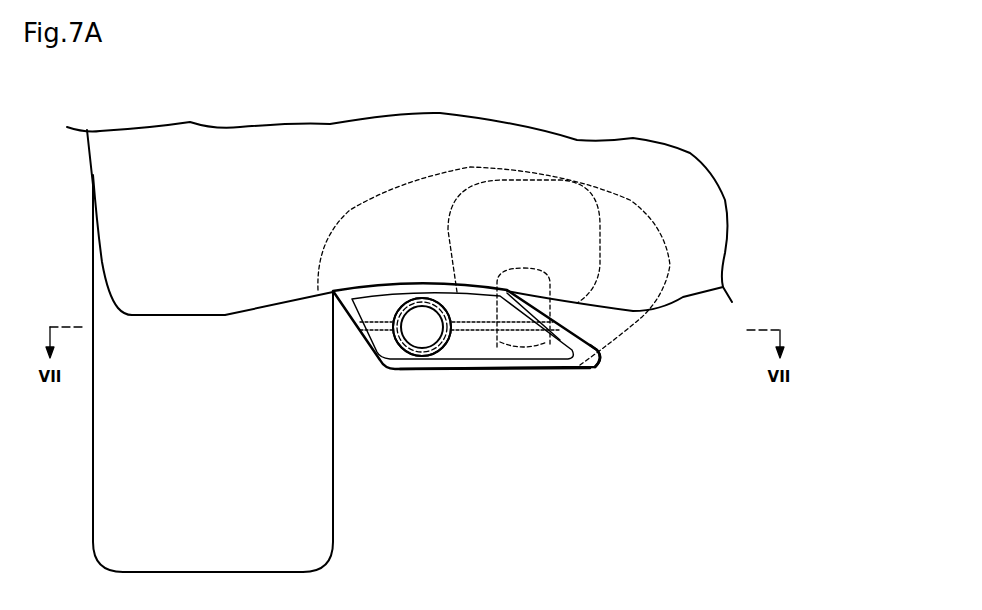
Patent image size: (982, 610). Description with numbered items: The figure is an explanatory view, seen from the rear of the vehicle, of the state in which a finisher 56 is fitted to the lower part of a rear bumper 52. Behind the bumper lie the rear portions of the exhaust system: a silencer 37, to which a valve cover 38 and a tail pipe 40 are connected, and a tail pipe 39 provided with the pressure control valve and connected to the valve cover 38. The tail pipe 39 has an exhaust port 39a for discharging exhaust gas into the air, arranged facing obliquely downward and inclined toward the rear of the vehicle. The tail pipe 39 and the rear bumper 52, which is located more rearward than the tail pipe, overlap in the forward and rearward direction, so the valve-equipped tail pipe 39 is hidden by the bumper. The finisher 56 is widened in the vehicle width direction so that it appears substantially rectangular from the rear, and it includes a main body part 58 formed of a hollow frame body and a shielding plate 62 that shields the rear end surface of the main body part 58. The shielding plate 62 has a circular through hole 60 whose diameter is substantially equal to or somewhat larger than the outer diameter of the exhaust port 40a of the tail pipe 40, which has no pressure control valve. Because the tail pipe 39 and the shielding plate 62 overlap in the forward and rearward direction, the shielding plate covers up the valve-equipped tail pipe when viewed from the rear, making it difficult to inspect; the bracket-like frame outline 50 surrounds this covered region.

The silencer 37 is at (605, 187).
The valve cover 38 is at (517, 180).
The tail pipe 39 is at (575, 370).
The exhaust port 39a is at (522, 348).
The tail pipe 40 is at (410, 308).
The exhaust port 40a is at (432, 300).
The bracket 50 is at (408, 372).
The rear bumper 52 is at (277, 318).
The finisher 56 is at (494, 392).
The main body part 58 is at (600, 358).
The circular through hole 60 is at (410, 358).
The shielding plate 62 is at (465, 345).